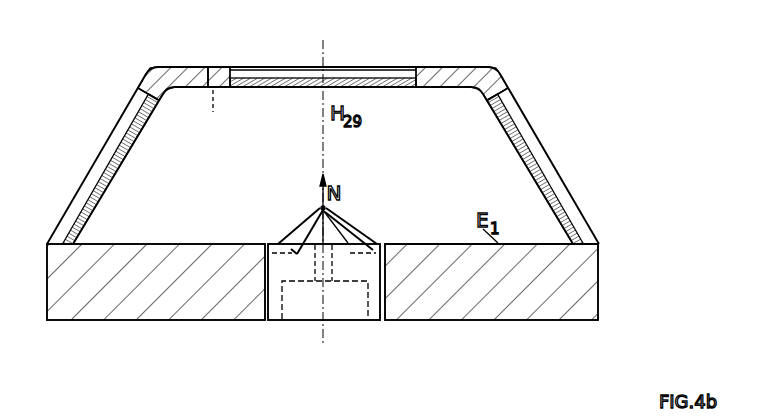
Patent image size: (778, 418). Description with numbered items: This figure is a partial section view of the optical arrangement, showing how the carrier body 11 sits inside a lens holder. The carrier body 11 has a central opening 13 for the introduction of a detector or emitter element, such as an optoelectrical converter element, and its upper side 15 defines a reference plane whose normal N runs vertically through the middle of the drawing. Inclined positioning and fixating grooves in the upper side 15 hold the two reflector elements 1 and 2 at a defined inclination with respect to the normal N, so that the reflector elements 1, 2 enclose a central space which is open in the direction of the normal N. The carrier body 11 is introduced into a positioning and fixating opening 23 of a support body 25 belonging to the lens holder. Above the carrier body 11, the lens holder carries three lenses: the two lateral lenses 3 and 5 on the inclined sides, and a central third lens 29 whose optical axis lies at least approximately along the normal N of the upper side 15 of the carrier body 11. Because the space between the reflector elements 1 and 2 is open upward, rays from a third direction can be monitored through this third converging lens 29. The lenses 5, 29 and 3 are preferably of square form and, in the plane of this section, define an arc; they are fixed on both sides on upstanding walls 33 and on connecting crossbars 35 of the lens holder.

The reflector element 1 is at (347, 232).
The reflector element 2 is at (302, 225).
The lateral lens 3 is at (537, 167).
The lateral lens 5 is at (118, 143).
The carrier body 11 is at (351, 310).
The central opening 13 is at (313, 287).
The upper side 15 is at (437, 243).
The positioning and fixating opening 23 is at (266, 320).
The support body 25 is at (485, 310).
The central third lens 29 is at (333, 78).
The upstanding wall 33 is at (206, 66).
The connecting crossbar 35 is at (156, 68).